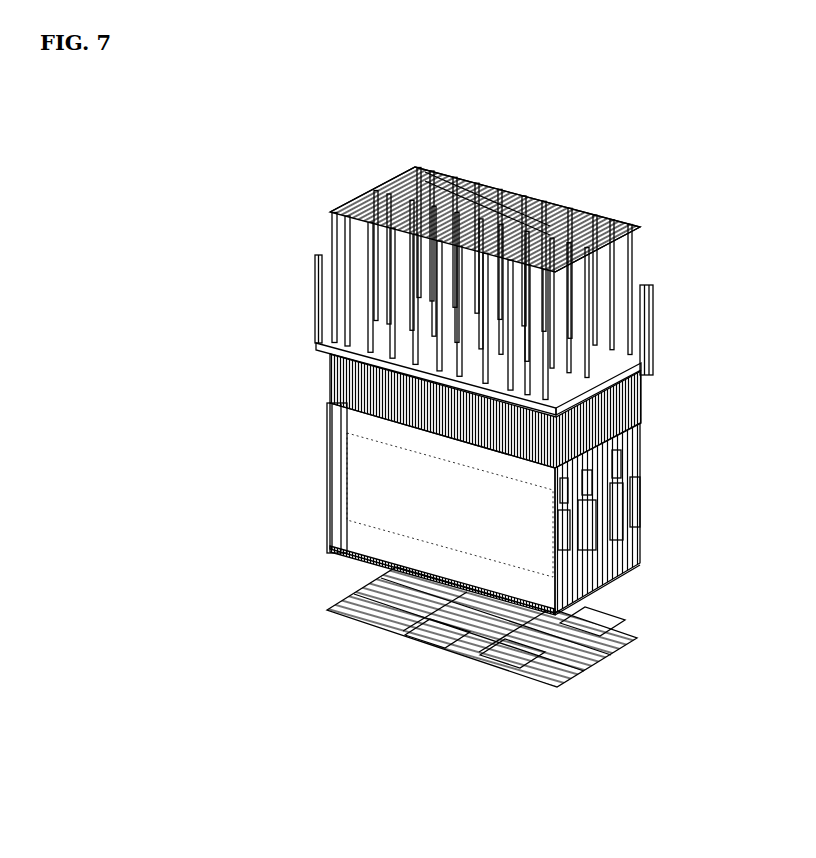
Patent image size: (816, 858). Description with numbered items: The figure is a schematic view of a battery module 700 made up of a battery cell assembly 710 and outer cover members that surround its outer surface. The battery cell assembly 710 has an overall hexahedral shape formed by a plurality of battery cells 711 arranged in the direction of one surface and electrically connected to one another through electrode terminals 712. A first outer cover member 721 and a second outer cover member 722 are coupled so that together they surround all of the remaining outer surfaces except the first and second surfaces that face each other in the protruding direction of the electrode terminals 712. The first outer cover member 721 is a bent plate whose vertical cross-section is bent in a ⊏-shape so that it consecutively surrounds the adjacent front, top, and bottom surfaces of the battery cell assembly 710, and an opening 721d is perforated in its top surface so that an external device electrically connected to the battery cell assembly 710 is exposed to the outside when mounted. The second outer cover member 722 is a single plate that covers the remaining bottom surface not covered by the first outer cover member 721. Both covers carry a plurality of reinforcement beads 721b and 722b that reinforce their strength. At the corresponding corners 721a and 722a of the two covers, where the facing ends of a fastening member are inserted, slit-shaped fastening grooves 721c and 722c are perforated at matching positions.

The battery module 700 is at (262, 202).
The battery cell assembly 710 is at (280, 444).
The battery cell 711 is at (377, 514).
The electrode terminal 712 is at (640, 490).
The first outer cover member 721 is at (280, 254).
The corner of first outer cover member 721a is at (358, 364).
The reinforcement bead 721b is at (620, 303).
The fastening groove 721c is at (357, 388).
The opening 721d is at (547, 222).
The second outer cover member 722 is at (280, 579).
The corner of second outer cover member 722a is at (427, 643).
The reinforcement bead 722b is at (590, 632).
The fastening groove 722c is at (500, 662).